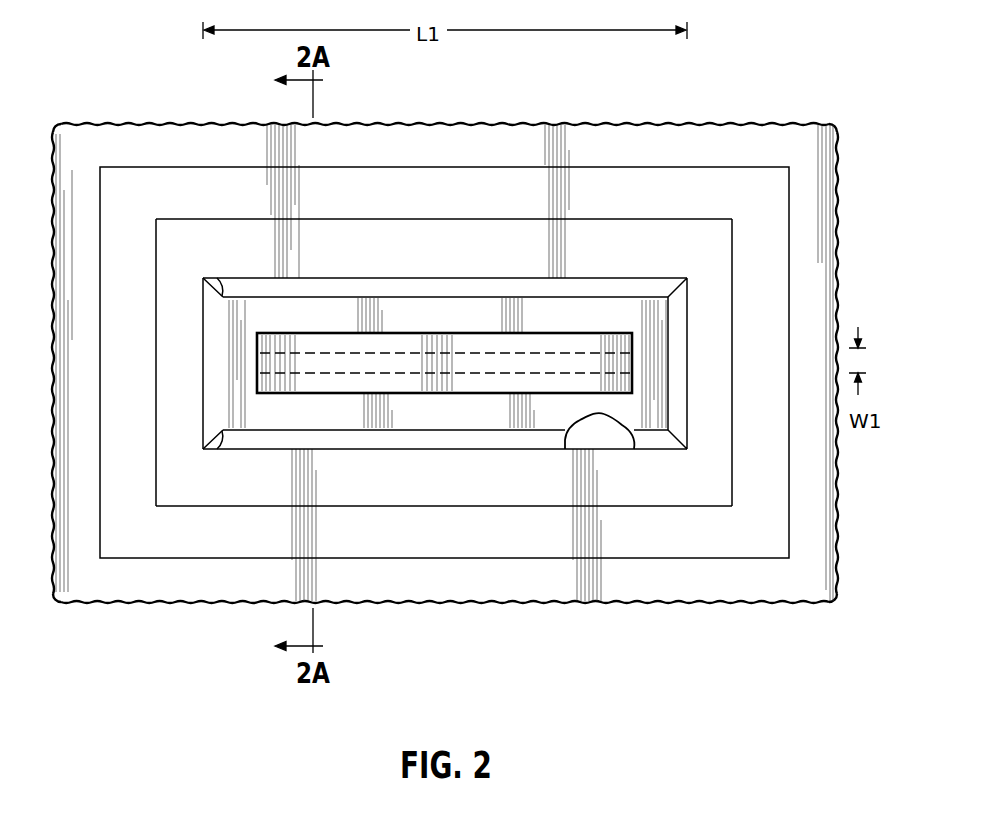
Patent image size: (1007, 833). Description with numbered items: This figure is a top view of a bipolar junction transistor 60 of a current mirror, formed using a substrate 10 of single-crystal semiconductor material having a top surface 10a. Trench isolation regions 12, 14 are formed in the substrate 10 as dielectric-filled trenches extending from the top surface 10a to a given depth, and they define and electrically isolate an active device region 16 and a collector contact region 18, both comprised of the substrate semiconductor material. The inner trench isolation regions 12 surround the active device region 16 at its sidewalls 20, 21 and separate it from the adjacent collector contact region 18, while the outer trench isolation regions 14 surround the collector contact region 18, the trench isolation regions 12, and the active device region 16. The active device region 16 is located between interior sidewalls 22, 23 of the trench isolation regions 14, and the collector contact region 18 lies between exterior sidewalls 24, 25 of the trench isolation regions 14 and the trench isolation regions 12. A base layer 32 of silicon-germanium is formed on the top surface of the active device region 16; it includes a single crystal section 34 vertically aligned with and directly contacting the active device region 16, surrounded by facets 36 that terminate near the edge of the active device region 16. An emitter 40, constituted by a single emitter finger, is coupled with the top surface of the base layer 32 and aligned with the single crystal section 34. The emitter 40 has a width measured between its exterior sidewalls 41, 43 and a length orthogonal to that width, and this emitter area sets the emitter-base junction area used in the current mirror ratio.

The substrate 10 is at (129, 118).
The top surface of the substrate 10a is at (212, 135).
The trench isolation regions 12 is at (641, 257).
The trench isolation regions 14 is at (773, 157).
The active device region 16 is at (622, 440).
The collector contact region 18 is at (691, 206).
The sidewall of the active device region 20 is at (243, 452).
The sidewall of the active device region 21 is at (255, 276).
The interior sidewall of the trench isolation regions 22 is at (218, 432).
The interior sidewall of the trench isolation regions 23 is at (218, 294).
The exterior sidewall of the trench isolation regions 24 is at (218, 508).
The exterior sidewall of the trench isolation regions 25 is at (225, 217).
The base layer 32 is at (454, 271).
The single crystal section 34 is at (457, 418).
The facets 36 is at (353, 285).
The emitter 40 is at (572, 345).
The exterior sidewall of the emitter 41 is at (490, 376).
The exterior sidewall of the emitter 43 is at (480, 350).
The bipolar junction transistor 60 is at (212, 262).